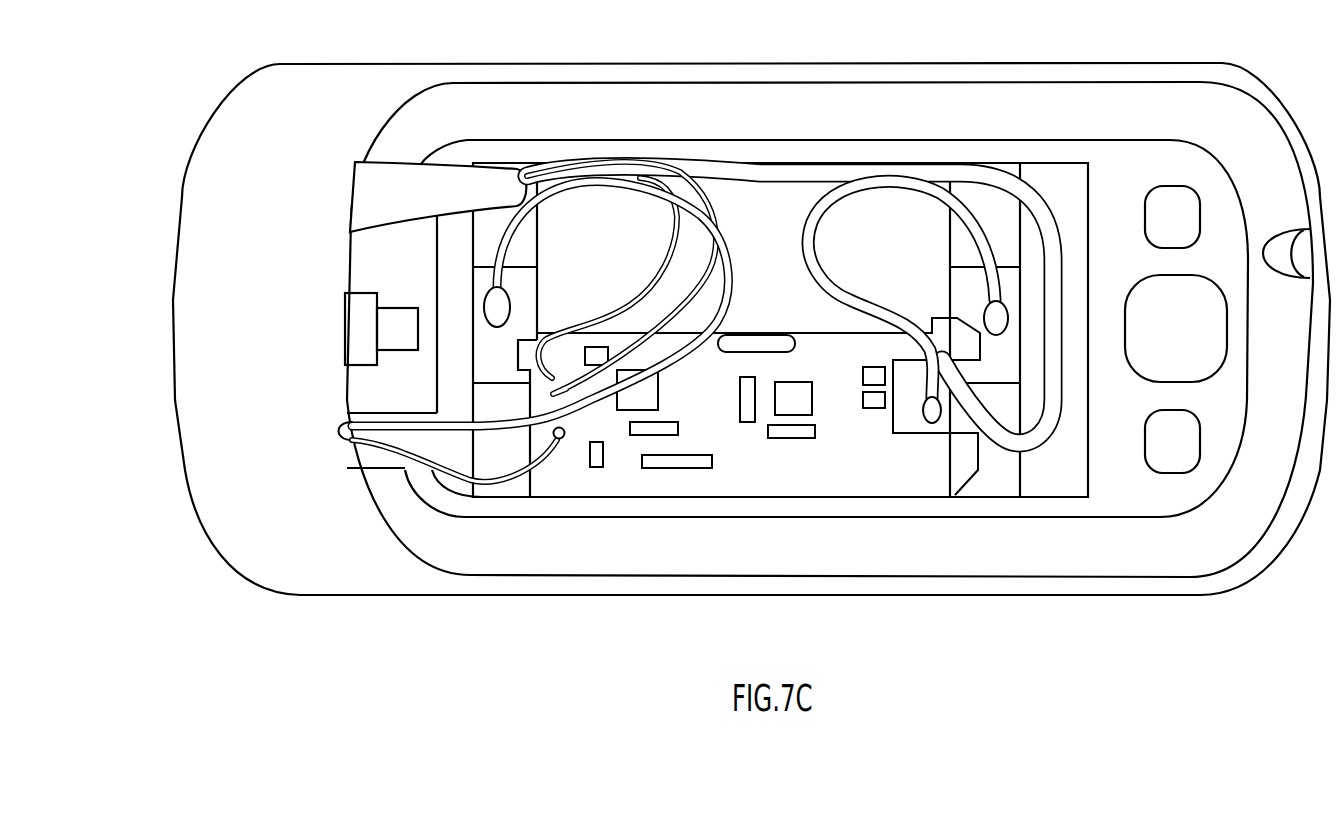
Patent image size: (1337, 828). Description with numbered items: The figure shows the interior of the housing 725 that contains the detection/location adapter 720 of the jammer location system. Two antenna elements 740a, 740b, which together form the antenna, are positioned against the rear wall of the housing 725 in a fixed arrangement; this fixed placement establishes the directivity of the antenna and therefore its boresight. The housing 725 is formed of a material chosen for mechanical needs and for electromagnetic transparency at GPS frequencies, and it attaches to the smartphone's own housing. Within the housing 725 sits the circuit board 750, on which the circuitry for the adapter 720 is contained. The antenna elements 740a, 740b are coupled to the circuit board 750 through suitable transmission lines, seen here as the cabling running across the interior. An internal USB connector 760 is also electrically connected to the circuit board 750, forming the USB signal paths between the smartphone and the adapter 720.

The adapter 720 is at (928, 616).
The housing 725 is at (298, 558).
The antenna element 740a is at (512, 442).
The antenna element 740b is at (1000, 467).
The circuit board 750 is at (745, 463).
The internal USB connector 760 is at (358, 335).